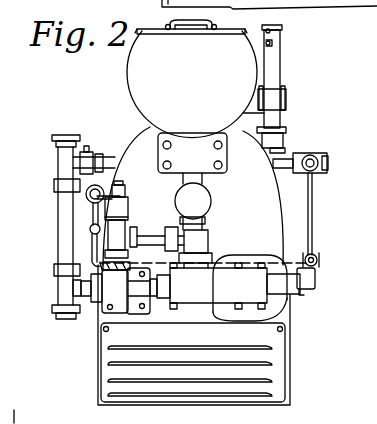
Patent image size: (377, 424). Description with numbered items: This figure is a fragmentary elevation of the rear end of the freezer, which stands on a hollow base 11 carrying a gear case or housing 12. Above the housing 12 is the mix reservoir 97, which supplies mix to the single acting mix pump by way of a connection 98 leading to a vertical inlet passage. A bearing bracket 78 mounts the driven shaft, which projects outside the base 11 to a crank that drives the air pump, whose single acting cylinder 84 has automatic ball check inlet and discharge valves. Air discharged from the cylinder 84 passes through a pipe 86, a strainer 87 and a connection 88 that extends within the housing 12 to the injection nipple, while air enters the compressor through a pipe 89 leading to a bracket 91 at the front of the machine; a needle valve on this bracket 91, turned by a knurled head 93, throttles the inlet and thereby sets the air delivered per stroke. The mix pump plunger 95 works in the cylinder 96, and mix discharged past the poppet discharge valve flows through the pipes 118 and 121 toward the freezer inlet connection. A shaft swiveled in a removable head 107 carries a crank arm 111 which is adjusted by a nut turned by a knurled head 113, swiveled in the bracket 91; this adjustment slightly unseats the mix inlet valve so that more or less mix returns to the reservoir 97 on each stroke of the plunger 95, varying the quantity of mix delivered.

The base 11 is at (292, 339).
The gear case or housing 12 is at (137, 135).
The bearing bracket 78 is at (242, 256).
The single acting cylinder 84 is at (305, 292).
The pipe 86 is at (313, 207).
The strainer 87 is at (310, 152).
The connection 88 is at (328, 165).
The pipe 89 is at (290, 262).
The bracket 91 is at (88, 216).
The knurled head 93 is at (92, 228).
The plunger 95 is at (169, 288).
The cylinder 96 is at (137, 291).
The reservoir 97 is at (133, 68).
The connection 98 is at (153, 235).
The removable head 107 is at (132, 202).
The crank arm 111 is at (86, 198).
The knurled head 113 is at (60, 188).
The pipe 118 is at (65, 293).
The pipe 121 is at (113, 155).